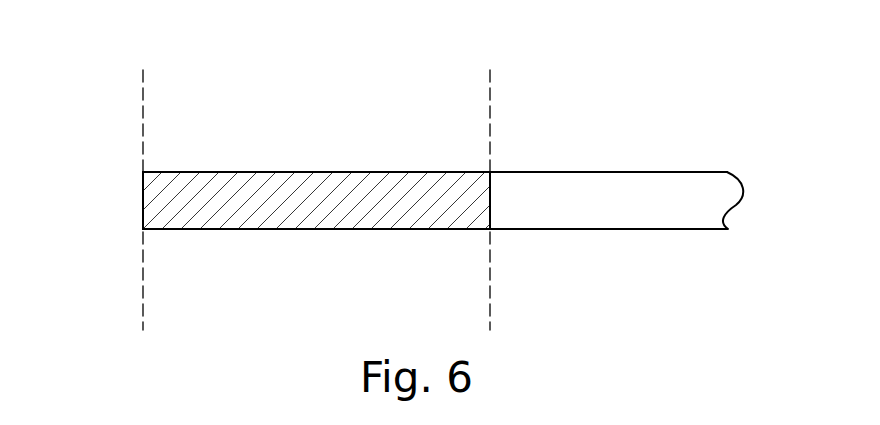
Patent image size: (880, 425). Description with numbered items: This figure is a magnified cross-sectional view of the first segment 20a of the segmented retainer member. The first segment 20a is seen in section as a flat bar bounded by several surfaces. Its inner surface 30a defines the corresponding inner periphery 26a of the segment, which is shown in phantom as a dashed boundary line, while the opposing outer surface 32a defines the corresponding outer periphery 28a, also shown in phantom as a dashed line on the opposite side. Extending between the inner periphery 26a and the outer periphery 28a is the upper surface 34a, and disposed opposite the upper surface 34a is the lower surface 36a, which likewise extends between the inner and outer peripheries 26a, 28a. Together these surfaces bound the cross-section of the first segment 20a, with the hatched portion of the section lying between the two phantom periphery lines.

The first segment 20a is at (726, 63).
The inner periphery 26a is at (490, 90).
The outer periphery 28a is at (143, 115).
The inner surface 30a is at (490, 193).
The outer surface 32a is at (143, 218).
The upper surface 34a is at (302, 172).
The lower surface 36a is at (310, 229).